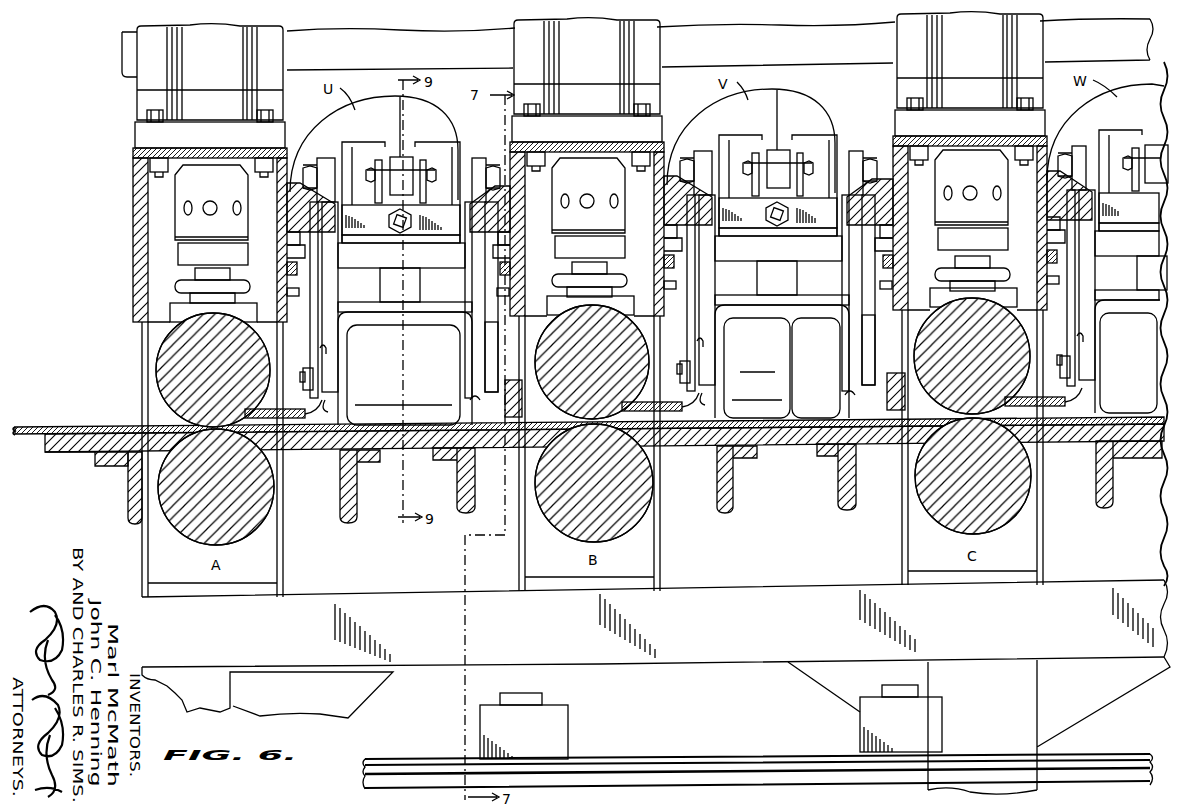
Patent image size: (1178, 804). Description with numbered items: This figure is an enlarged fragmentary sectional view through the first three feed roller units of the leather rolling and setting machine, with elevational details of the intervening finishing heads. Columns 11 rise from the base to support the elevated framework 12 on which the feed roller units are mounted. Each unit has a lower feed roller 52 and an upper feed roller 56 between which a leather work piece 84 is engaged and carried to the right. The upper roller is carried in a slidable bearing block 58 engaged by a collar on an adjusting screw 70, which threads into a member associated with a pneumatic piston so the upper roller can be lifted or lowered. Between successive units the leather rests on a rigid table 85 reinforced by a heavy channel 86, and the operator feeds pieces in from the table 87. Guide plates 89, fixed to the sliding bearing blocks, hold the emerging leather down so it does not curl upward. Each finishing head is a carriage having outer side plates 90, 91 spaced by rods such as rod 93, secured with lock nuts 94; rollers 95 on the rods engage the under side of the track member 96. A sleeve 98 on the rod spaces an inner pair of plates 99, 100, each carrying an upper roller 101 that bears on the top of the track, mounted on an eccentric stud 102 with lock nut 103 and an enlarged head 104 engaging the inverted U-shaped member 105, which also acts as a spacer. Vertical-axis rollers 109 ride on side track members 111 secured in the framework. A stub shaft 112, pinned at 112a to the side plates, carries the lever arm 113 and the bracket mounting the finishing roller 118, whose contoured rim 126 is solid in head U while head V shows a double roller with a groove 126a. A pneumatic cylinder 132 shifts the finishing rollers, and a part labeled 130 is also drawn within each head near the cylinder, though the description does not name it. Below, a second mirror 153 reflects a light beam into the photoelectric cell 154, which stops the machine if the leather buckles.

The column 11 is at (215, 703).
The elevated framework 12 is at (1084, 652).
The feed roller 52 is at (594, 481).
The feed roller 56 is at (593, 362).
The slidable bearing block 58 is at (155, 335).
The adjusting screw 70 is at (591, 207).
The leather work piece 84 is at (70, 425).
The table 85 is at (305, 452).
The channel 86 is at (358, 470).
The table 87 is at (55, 455).
The guide plate 89 is at (258, 411).
The side plate 90 is at (498, 330).
The side plate 91 is at (318, 342).
The rod 93 is at (283, 256).
The lock nut 94 is at (280, 234).
The roller 95 is at (290, 210).
The track member 96 is at (277, 191).
The sleeve 98 is at (415, 273).
The plate 99 is at (465, 298).
The plate 100 is at (338, 292).
The upper roller 101 is at (321, 160).
The stud 102 is at (298, 172).
The lock nut 103 is at (310, 170).
The enlarged head 104 is at (353, 157).
The inverted U-shaped member 105 is at (420, 133).
The roller 109 is at (286, 292).
The side track member 111 is at (283, 267).
The stub shaft 112 is at (303, 376).
The pin 112a is at (330, 407).
The lever arm 113 is at (1160, 186).
The leather finishing roller 118 is at (749, 362).
The rim 126 is at (568, 386).
The groove 126a is at (748, 372).
The block 130 is at (388, 157).
The cylinder 132 is at (390, 97).
The second mirror 153 is at (500, 415).
The photoelectric cell 154 is at (568, 733).